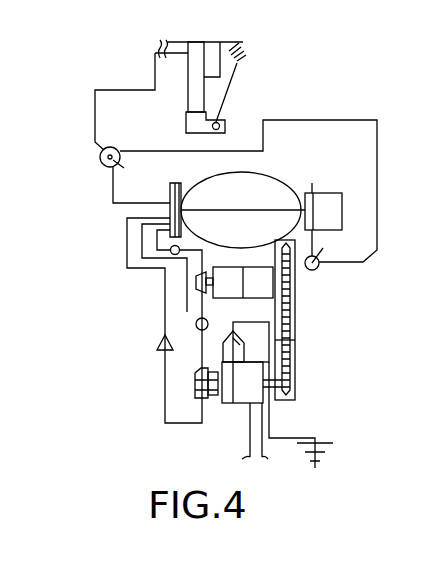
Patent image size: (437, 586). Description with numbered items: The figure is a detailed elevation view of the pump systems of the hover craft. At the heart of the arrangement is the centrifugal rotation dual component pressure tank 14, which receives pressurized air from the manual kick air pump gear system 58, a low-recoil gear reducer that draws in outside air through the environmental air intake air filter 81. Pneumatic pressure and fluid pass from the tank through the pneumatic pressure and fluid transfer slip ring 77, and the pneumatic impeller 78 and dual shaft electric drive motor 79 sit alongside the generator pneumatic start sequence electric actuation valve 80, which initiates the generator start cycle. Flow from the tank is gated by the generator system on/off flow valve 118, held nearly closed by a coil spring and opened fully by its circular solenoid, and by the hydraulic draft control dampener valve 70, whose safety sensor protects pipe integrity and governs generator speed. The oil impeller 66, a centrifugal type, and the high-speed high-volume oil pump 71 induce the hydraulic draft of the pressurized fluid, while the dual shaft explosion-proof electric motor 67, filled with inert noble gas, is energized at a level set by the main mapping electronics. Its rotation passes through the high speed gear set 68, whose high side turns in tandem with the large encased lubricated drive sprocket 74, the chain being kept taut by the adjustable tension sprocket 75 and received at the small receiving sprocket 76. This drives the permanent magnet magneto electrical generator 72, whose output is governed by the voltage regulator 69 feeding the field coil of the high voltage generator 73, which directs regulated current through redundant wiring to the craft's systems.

The centrifugal rotation dual component pressure tank 14 is at (270, 186).
The manual kick air pump gear system 58 is at (186, 122).
The oil impeller 66 is at (196, 280).
The dual shaft explosion-proof electric motor 67 is at (220, 288).
The high speed gear set 68 is at (268, 295).
The voltage regulator 69 is at (223, 343).
The hydraulic draft control dampener valve 70 is at (198, 329).
The high-speed high-volume oil pump 71 is at (200, 382).
The permanent magnet magneto electrical generator 72 is at (223, 403).
The high voltage generator 73 is at (257, 392).
The large encased lubricated drive sprocket 74 is at (295, 293).
The adjustable tension sprocket 75 is at (295, 348).
The small receiving sprocket 76 is at (295, 382).
The pneumatic pressure and fluid transfer slip ring 77 is at (168, 193).
The pneumatic impeller 78 is at (315, 228).
The dual shaft electric drive motor 79 is at (335, 203).
The generator pneumatic start sequence electric actuation valve 80 is at (318, 267).
The environmental air intake air filter 81 is at (213, 53).
The generator system on/off flow valve 118 is at (171, 249).